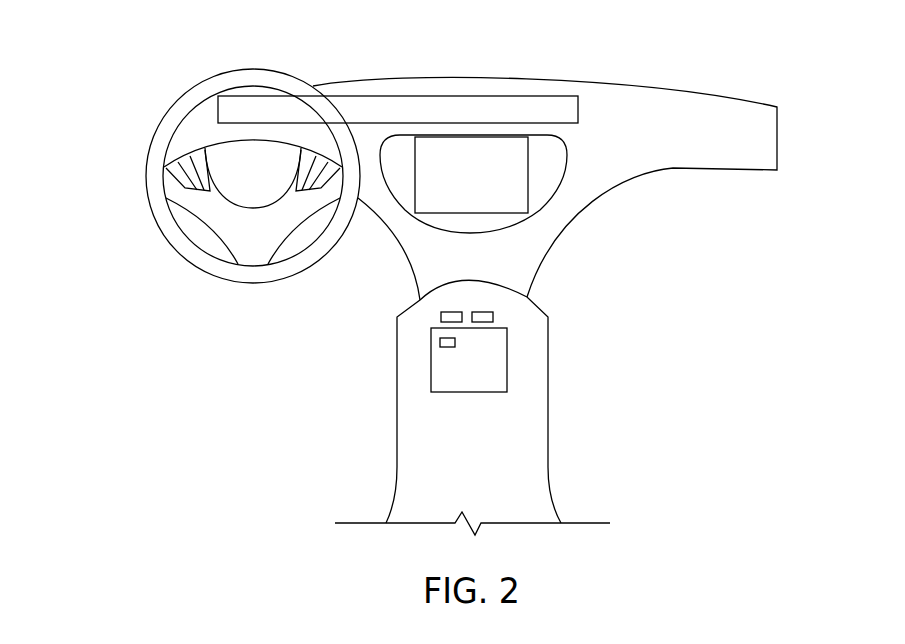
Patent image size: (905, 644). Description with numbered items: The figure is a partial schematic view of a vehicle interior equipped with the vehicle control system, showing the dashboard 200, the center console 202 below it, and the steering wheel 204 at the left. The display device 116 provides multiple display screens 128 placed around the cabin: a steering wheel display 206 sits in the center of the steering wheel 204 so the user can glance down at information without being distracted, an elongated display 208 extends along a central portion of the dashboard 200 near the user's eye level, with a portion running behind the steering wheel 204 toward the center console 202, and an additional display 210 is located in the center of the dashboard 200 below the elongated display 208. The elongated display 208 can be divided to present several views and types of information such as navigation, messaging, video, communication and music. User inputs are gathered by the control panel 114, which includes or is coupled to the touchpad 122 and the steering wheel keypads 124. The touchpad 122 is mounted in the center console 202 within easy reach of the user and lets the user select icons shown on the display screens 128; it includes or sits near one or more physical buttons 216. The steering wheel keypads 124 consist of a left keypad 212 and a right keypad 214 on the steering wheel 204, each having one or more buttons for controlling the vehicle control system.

The control panel 114 is at (462, 360).
The display device 116 is at (489, 135).
The touchpad 122 is at (495, 370).
The steering wheel keypads 124 is at (212, 147).
The display screens 128 is at (413, 135).
The dashboard 200 is at (520, 78).
The center console 202 is at (475, 389).
The steering wheel 204 is at (235, 147).
The steering wheel display 206 is at (270, 167).
The elongated display 208 is at (578, 115).
The additional display 210 is at (515, 195).
The left keypad 212 is at (183, 174).
The right keypad 214 is at (315, 183).
The physical buttons 216 is at (487, 312).